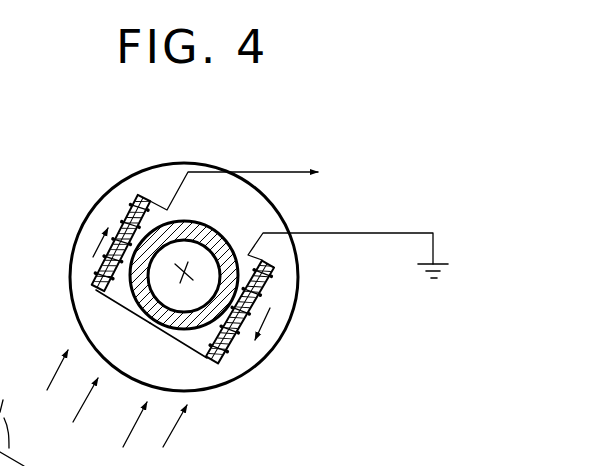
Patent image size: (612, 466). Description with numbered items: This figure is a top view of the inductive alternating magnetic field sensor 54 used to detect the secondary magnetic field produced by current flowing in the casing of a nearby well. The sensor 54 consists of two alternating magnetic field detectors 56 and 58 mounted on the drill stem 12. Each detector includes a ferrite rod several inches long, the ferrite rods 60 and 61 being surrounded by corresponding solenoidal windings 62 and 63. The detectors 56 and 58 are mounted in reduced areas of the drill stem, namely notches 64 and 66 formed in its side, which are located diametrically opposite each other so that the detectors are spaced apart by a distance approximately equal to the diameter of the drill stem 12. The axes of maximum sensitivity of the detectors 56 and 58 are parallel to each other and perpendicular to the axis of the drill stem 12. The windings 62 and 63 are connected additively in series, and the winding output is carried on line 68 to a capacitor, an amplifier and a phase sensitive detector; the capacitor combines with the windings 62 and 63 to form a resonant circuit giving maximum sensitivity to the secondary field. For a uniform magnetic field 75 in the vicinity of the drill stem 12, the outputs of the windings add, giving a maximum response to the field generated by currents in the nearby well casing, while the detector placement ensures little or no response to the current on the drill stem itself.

The drill stem 12 is at (190, 163).
The alternating magnetic field sensor 54 is at (92, 186).
The alternating magnetic field detector 56 is at (100, 265).
The alternating magnetic field detector 58 is at (274, 298).
The ferrite rod 60 is at (148, 194).
The ferrite rod 61 is at (278, 265).
The solenoidal winding 62 is at (95, 289).
The solenoidal winding 63 is at (240, 343).
The notch 64 is at (93, 222).
The notch 66 is at (283, 332).
The line 68 is at (247, 172).
The uniform magnetic field 75 is at (180, 432).